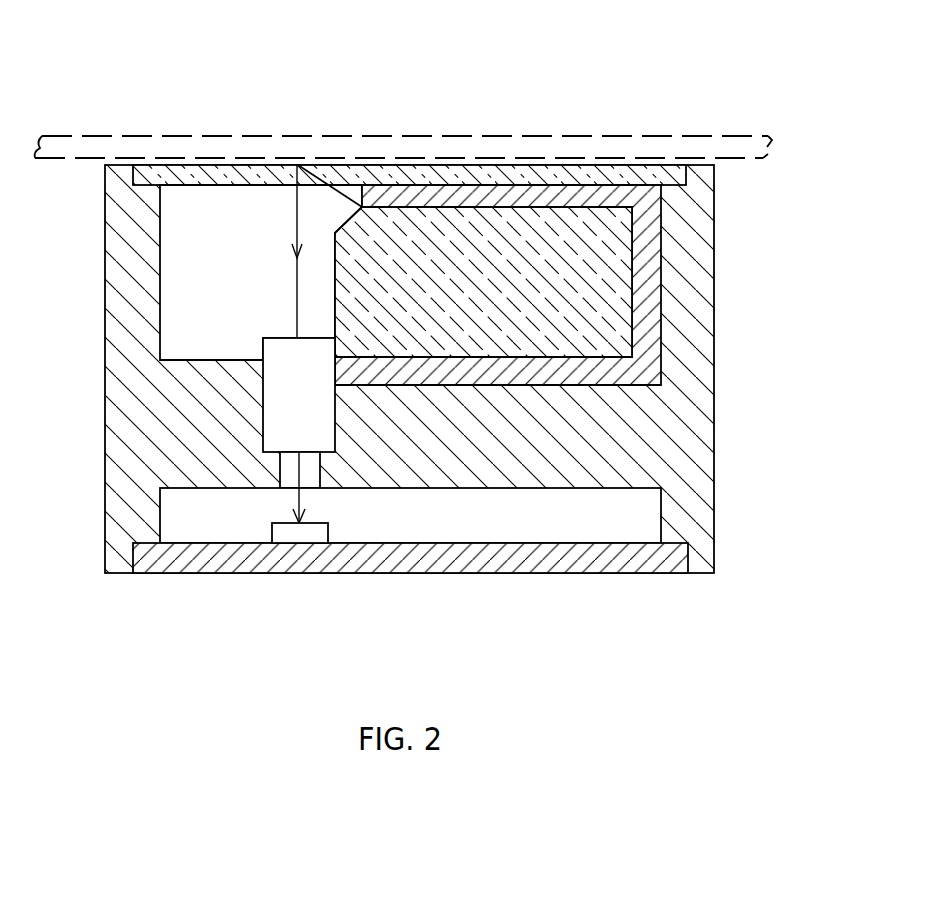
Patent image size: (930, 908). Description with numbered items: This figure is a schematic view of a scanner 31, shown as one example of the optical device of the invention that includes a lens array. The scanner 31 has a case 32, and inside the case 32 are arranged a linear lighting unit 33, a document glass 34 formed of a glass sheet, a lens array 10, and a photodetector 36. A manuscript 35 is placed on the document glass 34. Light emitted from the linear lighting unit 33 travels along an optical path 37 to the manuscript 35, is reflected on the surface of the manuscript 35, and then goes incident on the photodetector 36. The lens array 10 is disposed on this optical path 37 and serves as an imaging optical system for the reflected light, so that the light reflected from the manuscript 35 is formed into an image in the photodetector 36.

The scanner 31 is at (726, 83).
The case 32 is at (120, 433).
The linear lighting unit 33 is at (404, 226).
The document glass 34 is at (212, 178).
The manuscript 35 is at (98, 134).
The photodetector 36 is at (296, 538).
The optical path 37 is at (297, 300).
The lens array 10 is at (277, 416).